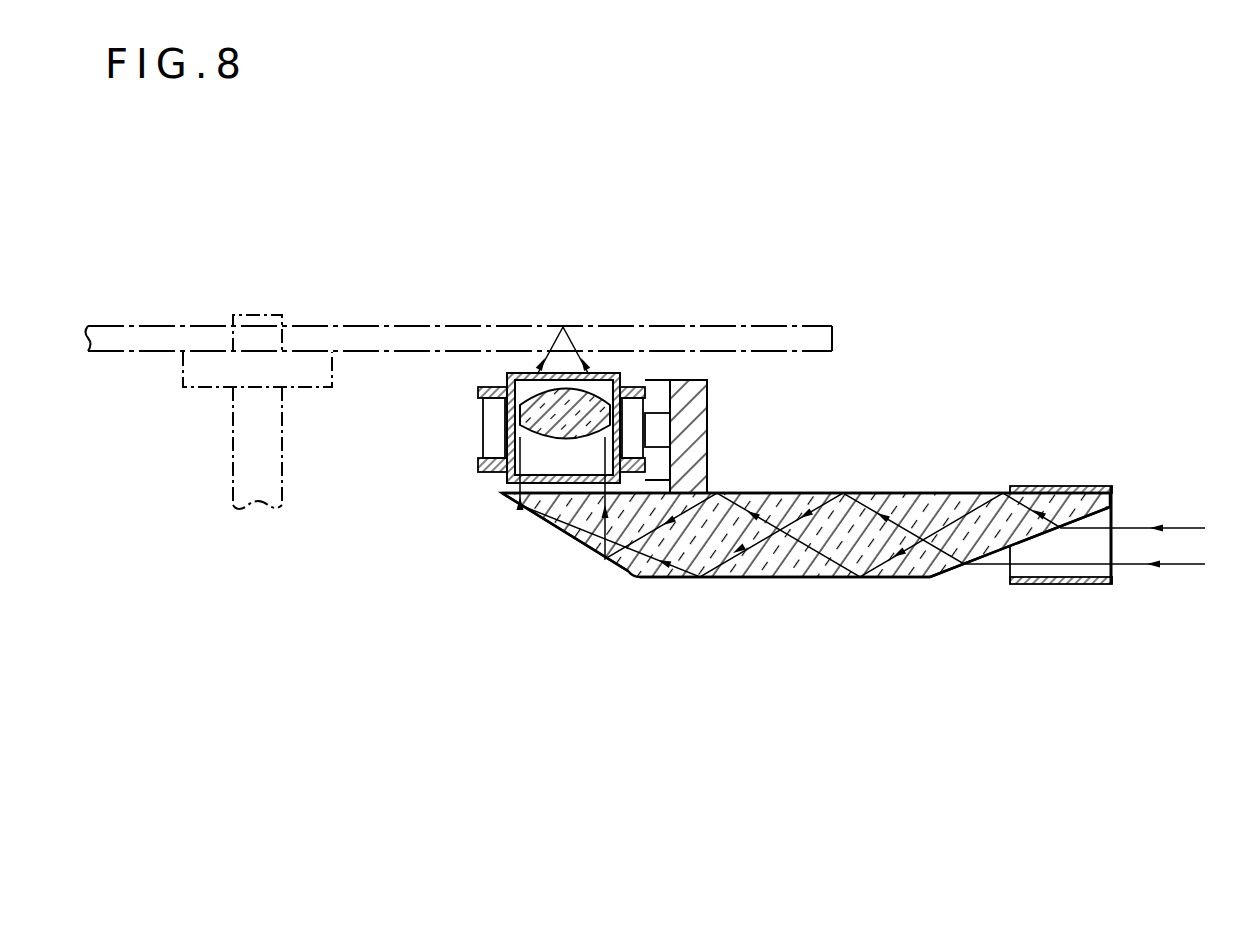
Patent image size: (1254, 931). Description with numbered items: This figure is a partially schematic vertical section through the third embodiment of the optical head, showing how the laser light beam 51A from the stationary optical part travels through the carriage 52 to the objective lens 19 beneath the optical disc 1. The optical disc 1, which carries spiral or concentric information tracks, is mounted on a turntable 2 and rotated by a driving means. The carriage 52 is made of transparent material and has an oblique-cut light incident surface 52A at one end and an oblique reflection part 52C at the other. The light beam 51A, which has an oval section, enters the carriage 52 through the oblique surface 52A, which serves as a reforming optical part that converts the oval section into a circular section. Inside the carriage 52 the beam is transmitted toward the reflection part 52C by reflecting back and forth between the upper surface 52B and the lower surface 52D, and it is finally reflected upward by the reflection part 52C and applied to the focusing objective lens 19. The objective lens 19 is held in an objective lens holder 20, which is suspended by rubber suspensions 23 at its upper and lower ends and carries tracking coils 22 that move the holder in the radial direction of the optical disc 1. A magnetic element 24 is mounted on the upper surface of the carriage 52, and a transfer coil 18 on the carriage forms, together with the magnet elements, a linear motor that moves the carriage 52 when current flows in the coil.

The optical disc 1 is at (398, 327).
The turntable 2 is at (276, 318).
The transfer coil 18 is at (1050, 585).
The objective lens 19 is at (604, 380).
The objective lens holder 20 is at (483, 396).
The tracking coil 22 is at (640, 387).
The rubber suspension 23 is at (516, 373).
The magnetic element 24 is at (708, 418).
The laser light beam 51A is at (1187, 526).
The carriage 52 is at (925, 493).
The oblique light incident surface 52A is at (950, 578).
The upper surface 52B is at (790, 493).
The reflection part 52C is at (582, 544).
The lower surface 52D is at (782, 578).